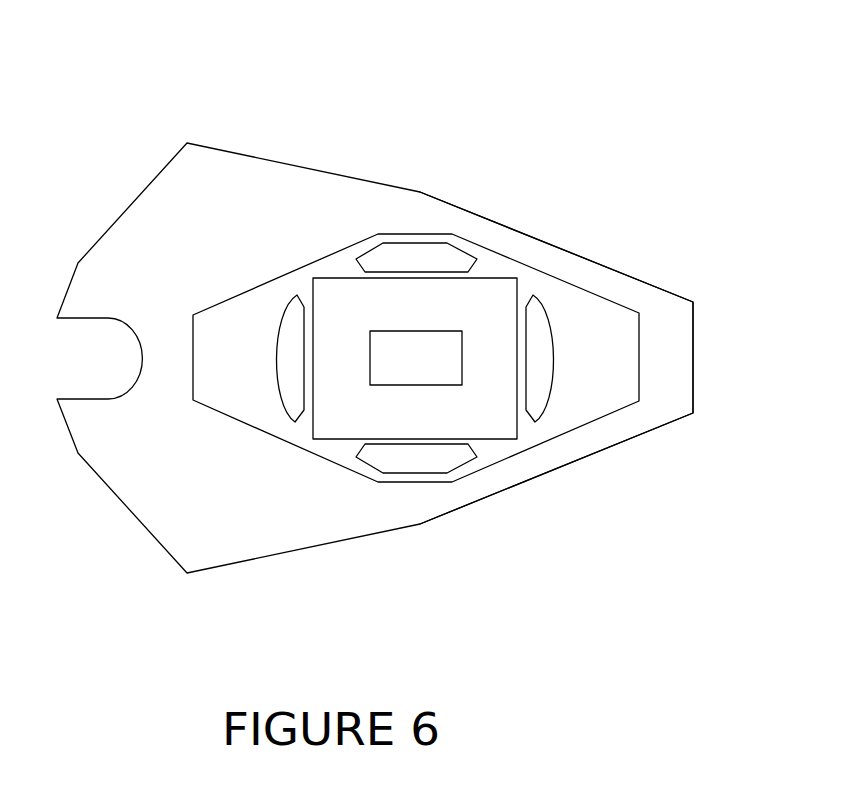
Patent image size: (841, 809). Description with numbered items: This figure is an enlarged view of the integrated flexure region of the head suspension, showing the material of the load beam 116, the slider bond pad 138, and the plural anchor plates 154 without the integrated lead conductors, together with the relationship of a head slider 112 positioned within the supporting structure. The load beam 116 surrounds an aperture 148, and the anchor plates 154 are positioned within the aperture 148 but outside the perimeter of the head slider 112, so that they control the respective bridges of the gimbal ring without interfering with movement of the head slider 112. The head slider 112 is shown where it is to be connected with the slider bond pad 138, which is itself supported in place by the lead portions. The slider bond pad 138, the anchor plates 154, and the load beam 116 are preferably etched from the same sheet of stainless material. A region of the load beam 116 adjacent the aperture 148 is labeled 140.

The head slider 112 is at (489, 415).
The load beam 116 is at (248, 235).
The slider bond pad 138 is at (440, 340).
The mounting surface 140 is at (673, 359).
The aperture 148 is at (238, 420).
The anchor plates 154 is at (403, 253).